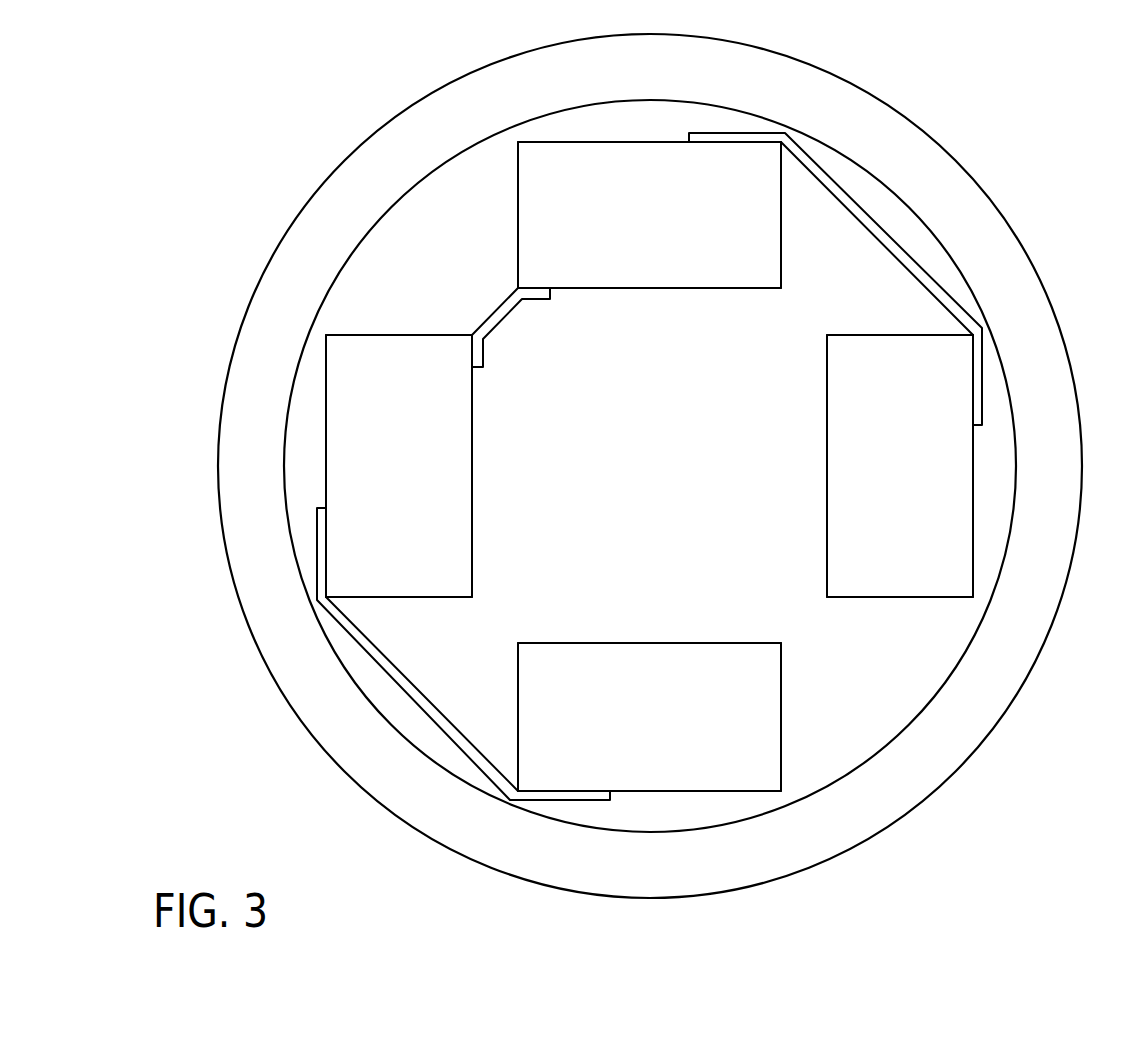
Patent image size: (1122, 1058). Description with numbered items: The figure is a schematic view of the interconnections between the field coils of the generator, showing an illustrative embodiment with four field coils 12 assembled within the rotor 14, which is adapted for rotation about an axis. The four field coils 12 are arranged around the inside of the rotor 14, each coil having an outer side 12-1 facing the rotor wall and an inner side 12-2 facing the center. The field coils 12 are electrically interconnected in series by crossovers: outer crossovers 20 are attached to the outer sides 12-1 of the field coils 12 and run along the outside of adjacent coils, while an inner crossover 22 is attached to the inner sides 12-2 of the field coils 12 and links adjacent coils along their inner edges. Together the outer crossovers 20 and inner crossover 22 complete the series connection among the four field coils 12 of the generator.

The field coil 12 is at (518, 224).
The outer side 12-1 is at (650, 142).
The inner side 12-2 is at (658, 289).
The rotor 14 is at (903, 207).
The outer crossover 20 is at (888, 250).
The inner crossover 22 is at (503, 318).